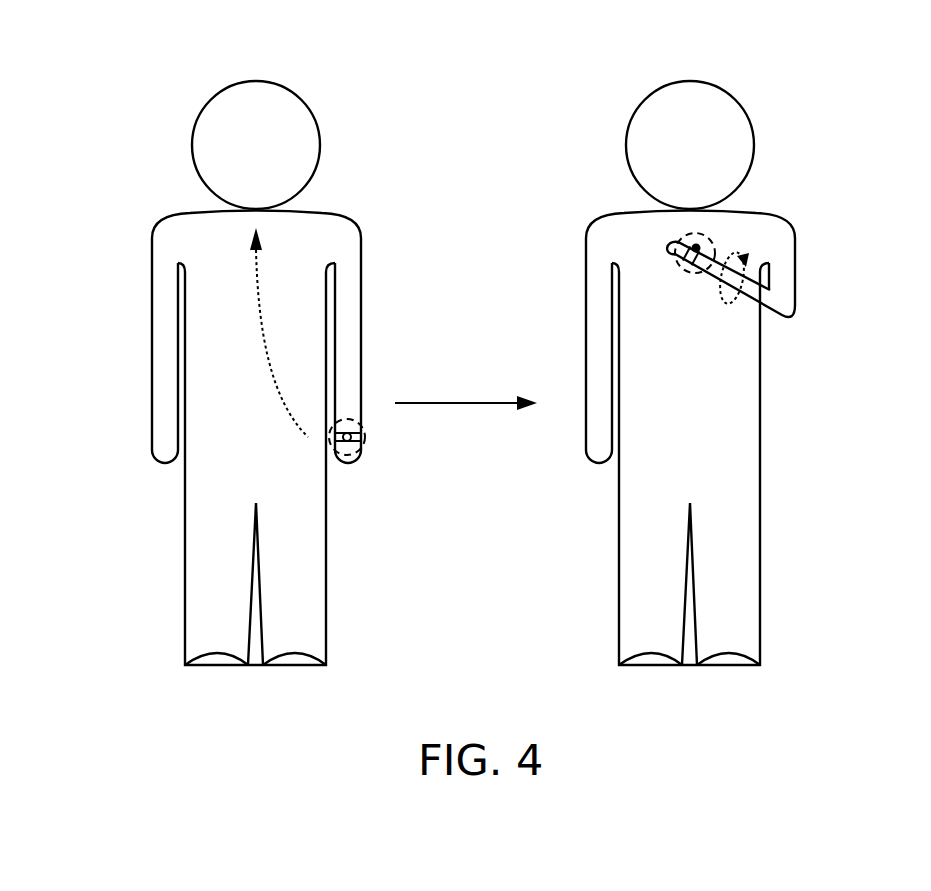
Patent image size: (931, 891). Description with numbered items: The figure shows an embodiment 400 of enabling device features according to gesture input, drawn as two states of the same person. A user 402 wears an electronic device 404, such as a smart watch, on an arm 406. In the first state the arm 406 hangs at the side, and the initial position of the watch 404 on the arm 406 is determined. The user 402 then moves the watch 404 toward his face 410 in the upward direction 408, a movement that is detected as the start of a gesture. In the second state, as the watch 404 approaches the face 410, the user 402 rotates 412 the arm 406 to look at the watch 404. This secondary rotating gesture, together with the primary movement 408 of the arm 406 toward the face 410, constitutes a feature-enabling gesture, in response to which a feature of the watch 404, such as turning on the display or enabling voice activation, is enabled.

The gesture scenario 400 is at (108, 47).
The user 402 is at (150, 262).
The electronic device 404 is at (366, 442).
The arm 406 is at (347, 352).
The upward direction 408 is at (262, 306).
The face 410 is at (313, 152).
The rotation 412 is at (726, 300).